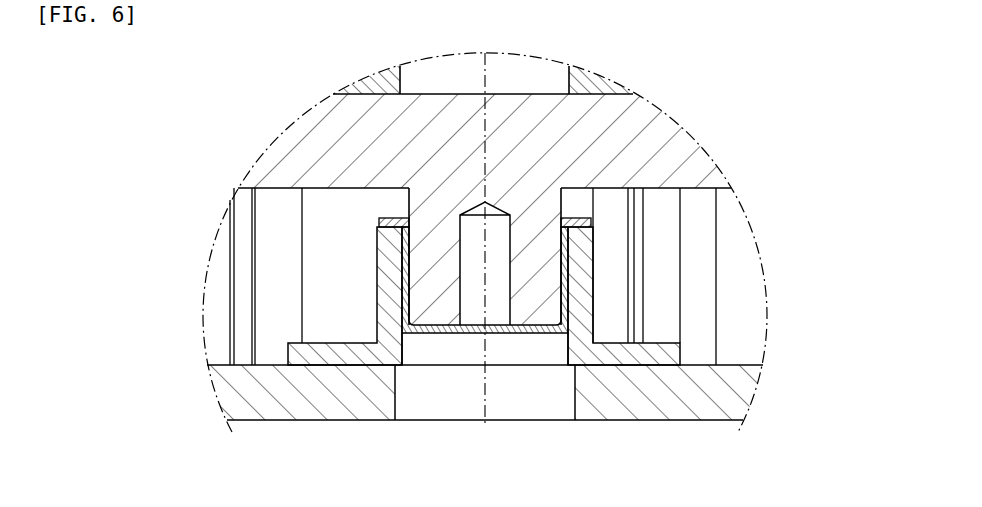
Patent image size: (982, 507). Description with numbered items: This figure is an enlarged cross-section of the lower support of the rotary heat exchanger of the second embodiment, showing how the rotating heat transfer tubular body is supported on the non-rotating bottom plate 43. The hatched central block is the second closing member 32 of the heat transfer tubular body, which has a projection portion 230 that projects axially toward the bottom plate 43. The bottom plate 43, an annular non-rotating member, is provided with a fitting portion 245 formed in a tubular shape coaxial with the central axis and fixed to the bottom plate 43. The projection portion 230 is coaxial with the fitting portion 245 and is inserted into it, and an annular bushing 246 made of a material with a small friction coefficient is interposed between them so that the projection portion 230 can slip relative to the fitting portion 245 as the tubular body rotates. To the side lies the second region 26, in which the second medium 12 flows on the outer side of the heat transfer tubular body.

The second medium 12 is at (323, 265).
The second region 26 is at (318, 311).
The second closing member 32 is at (678, 143).
The bottom plate 43 is at (733, 390).
The projection portion 230 is at (537, 305).
The fitting portion 245 is at (640, 358).
The bushing 246 is at (403, 297).